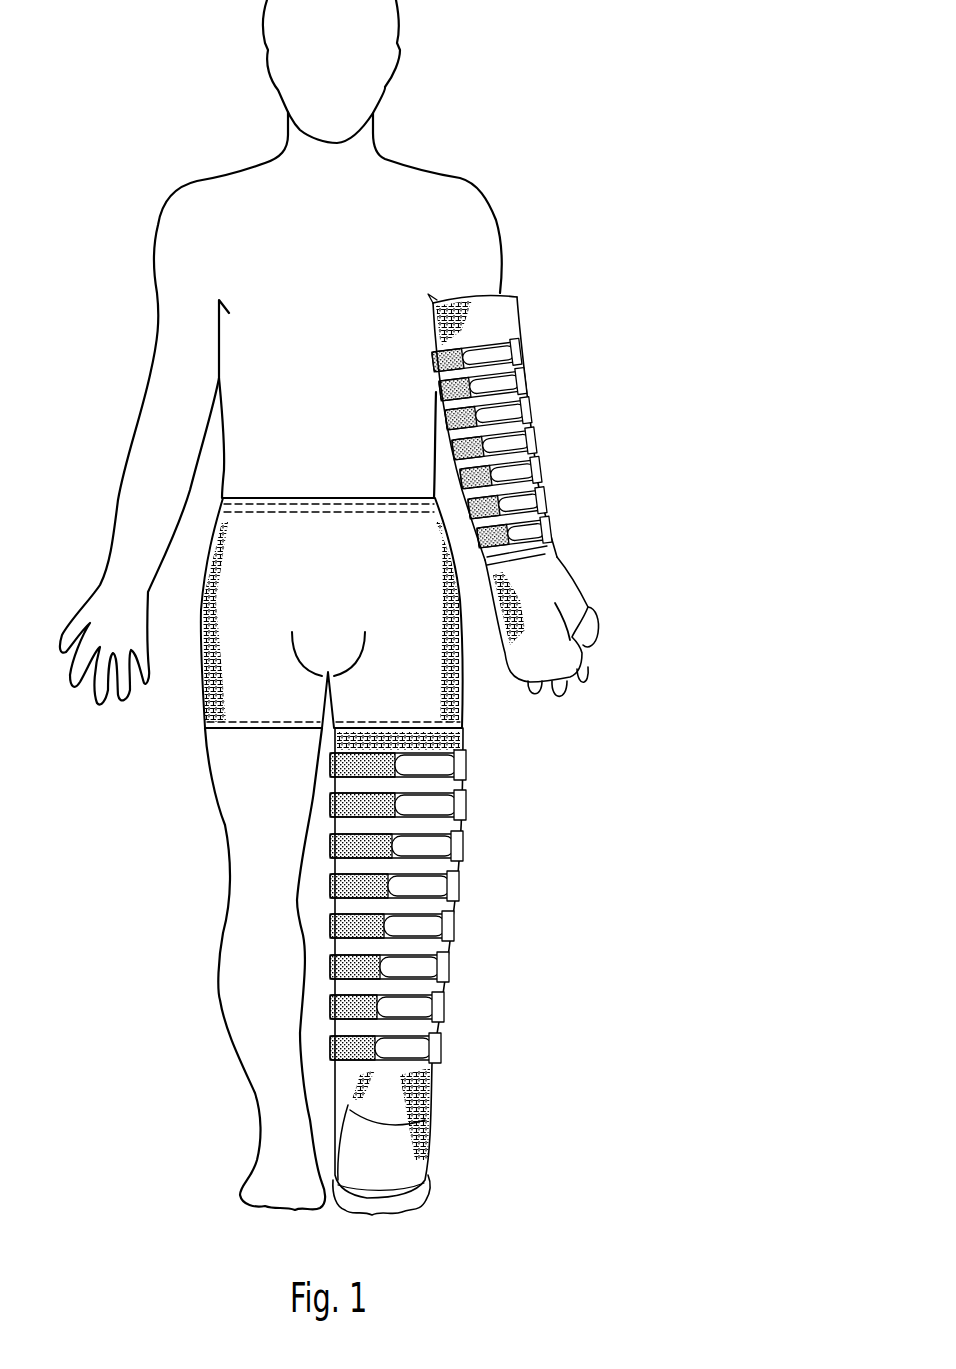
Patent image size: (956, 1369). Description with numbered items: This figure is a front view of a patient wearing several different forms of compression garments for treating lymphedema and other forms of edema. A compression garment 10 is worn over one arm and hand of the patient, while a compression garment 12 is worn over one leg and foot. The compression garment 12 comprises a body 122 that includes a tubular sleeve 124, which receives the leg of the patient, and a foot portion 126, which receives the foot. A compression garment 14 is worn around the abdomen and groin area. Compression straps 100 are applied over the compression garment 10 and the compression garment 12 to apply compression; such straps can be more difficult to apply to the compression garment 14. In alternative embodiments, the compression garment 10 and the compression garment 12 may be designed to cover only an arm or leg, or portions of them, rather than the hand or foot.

The compression garment 10 is at (562, 415).
The compression garment 12 is at (472, 971).
The compression garment 14 is at (182, 716).
The compression straps 100 is at (442, 966).
The body 122 is at (472, 1107).
The tubular sleeve 124 is at (436, 1031).
The foot portion 126 is at (436, 1137).